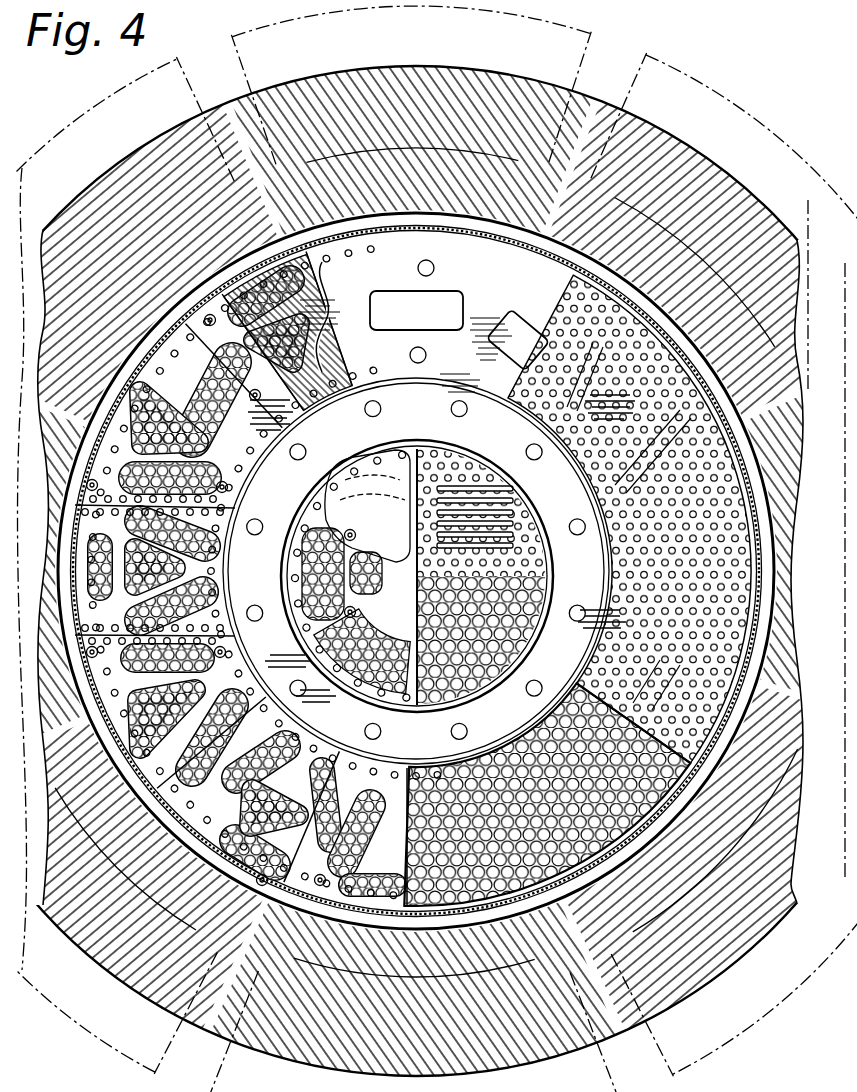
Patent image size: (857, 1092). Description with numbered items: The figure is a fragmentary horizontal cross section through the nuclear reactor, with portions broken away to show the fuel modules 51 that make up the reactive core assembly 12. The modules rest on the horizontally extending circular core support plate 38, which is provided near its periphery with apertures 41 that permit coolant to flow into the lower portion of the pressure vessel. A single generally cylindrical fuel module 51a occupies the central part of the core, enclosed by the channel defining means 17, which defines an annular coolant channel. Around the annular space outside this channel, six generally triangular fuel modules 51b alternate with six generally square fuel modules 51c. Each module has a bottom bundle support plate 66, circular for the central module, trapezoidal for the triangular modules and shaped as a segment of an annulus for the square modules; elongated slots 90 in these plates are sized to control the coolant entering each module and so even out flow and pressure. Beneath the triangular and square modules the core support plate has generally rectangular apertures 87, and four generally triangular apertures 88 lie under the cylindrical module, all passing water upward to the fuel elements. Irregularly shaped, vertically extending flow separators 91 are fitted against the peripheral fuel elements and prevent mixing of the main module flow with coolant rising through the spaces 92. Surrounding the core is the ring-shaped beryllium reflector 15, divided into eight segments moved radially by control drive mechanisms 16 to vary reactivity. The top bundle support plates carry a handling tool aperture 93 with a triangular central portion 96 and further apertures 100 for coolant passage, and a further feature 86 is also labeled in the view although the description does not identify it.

The reactive core assembly 12 is at (676, 310).
The reflector 15 is at (428, 549).
The control drive mechanisms 16 is at (292, 928).
The channel defining means 17 is at (530, 655).
The core support plate 38 is at (445, 390).
The apertures 41 is at (528, 447).
The fuel modules 51 is at (205, 880).
The cylindrical fuel module 51a is at (276, 590).
The triangular fuel modules 51b is at (140, 330).
The square fuel modules 51c is at (244, 262).
The bottom bundle support plate 66 is at (390, 400).
The hole 86 is at (434, 266).
The rectangular apertures 87 is at (362, 296).
The triangular apertures 88 is at (355, 462).
The elongated slots 90 is at (548, 330).
The flow separators 91 is at (445, 720).
The spaces 92 is at (510, 700).
The aperture 93 is at (352, 700).
The triangular central portion 96 is at (318, 268).
The apertures 100 is at (285, 214).